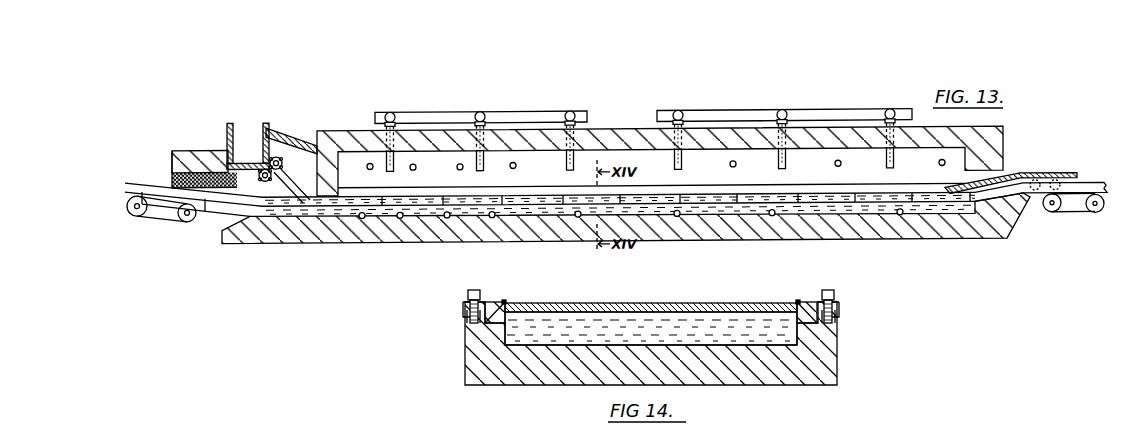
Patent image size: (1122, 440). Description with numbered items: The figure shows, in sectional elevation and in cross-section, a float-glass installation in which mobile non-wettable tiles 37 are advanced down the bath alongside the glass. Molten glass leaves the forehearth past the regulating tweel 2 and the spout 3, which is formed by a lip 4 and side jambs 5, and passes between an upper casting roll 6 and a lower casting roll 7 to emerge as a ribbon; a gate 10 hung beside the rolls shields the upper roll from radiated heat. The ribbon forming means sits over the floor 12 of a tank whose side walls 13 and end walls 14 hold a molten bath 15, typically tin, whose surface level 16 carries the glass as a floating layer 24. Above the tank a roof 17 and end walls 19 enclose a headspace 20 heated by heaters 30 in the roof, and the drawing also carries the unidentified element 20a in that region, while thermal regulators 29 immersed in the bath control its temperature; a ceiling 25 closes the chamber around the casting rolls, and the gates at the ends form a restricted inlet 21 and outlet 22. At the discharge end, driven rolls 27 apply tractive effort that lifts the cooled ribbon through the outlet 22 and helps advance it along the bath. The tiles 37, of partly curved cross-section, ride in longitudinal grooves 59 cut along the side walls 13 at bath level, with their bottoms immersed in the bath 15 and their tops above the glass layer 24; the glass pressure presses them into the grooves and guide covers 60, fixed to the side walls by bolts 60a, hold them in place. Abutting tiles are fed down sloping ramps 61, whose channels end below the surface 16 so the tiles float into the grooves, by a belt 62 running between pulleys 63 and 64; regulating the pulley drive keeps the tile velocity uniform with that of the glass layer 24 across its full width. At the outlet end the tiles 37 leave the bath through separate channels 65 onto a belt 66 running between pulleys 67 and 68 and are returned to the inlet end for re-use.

In FIG. 13, the regulating tweel 2 is at (228, 134).
In FIG. 13, the spout 3 is at (243, 197).
In FIG. 13, the lip 4 is at (250, 175).
In FIG. 13, the side jambs 5 is at (242, 160).
In FIG. 13, the upper casting roll 6 is at (282, 163).
In FIG. 13, the lower casting roll 7 is at (272, 176).
In FIG. 13, the gate 10 is at (268, 132).
In FIG. 13, the floor 12 is at (422, 233).
In FIG. 14, the floor 12 is at (530, 367).
In FIG. 14, the side walls 13 is at (480, 360).
In FIG. 13, the end walls 14 is at (577, 190).
In FIG. 13, the molten bath 15 is at (323, 222).
In FIG. 14, the molten bath 15 is at (658, 330).
In FIG. 13, the surface level of the bath 16 is at (282, 245).
In FIG. 13, the roof 17 is at (530, 143).
In FIG. 13, the end walls of roof structure 19 is at (327, 148).
In FIG. 13, the headspace 20 is at (657, 162).
In FIG. 13, the bolt 20a is at (567, 166).
In FIG. 13, the inlet 21 is at (333, 200).
In FIG. 13, the outlet 22 is at (328, 178).
In FIG. 13, the floating layer 24 is at (298, 140).
In FIG. 14, the floating layer 24 is at (597, 308).
In FIG. 13, the ceiling 25 is at (287, 145).
In FIG. 13, the driven rolls 27 is at (1052, 185).
In FIG. 13, the thermal regulators 29 is at (400, 219).
In FIG. 13, the heaters 30 is at (370, 164).
In FIG. 13, the mobile non-wettable tiles 37 is at (138, 183).
In FIG. 14, the mobile non-wettable tiles 37 is at (500, 304).
In FIG. 14, the grooves 59 is at (485, 318).
In FIG. 14, the guide covers 60 is at (467, 306).
In FIG. 14, the bolts 60a is at (476, 292).
In FIG. 13, the ramps 61 is at (252, 217).
In FIG. 13, the belt 62 is at (152, 221).
In FIG. 13, the pulley 63 is at (133, 216).
In FIG. 13, the pulley 64 is at (178, 218).
In FIG. 13, the channels 65 is at (995, 212).
In FIG. 13, the belt 66 is at (1077, 218).
In FIG. 13, the pulley 67 is at (1050, 218).
In FIG. 13, the pulley 68 is at (1099, 217).